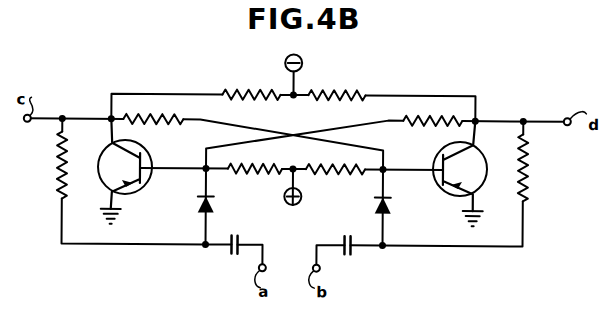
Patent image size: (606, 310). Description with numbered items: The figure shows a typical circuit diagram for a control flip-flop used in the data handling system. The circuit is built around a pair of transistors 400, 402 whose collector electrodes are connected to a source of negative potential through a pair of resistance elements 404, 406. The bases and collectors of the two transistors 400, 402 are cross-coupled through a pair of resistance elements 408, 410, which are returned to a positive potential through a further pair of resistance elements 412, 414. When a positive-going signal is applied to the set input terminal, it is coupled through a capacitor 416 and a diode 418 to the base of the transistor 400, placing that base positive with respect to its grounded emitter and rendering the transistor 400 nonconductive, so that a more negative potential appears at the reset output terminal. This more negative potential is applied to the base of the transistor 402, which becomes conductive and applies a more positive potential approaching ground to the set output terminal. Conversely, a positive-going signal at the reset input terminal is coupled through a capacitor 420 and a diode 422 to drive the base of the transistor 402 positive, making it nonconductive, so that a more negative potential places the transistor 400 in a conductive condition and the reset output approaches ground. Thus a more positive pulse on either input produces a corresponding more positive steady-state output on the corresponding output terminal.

The transistor 400 is at (125, 197).
The transistor 402 is at (441, 190).
The resistance element 404 is at (248, 90).
The resistance element 406 is at (333, 90).
The resistance element 408 is at (152, 113).
The resistance element 410 is at (418, 114).
The resistance element 412 is at (256, 173).
The resistance element 414 is at (334, 173).
The capacitor 416 is at (230, 255).
The diode 418 is at (198, 212).
The capacitor 420 is at (352, 255).
The diode 422 is at (392, 212).